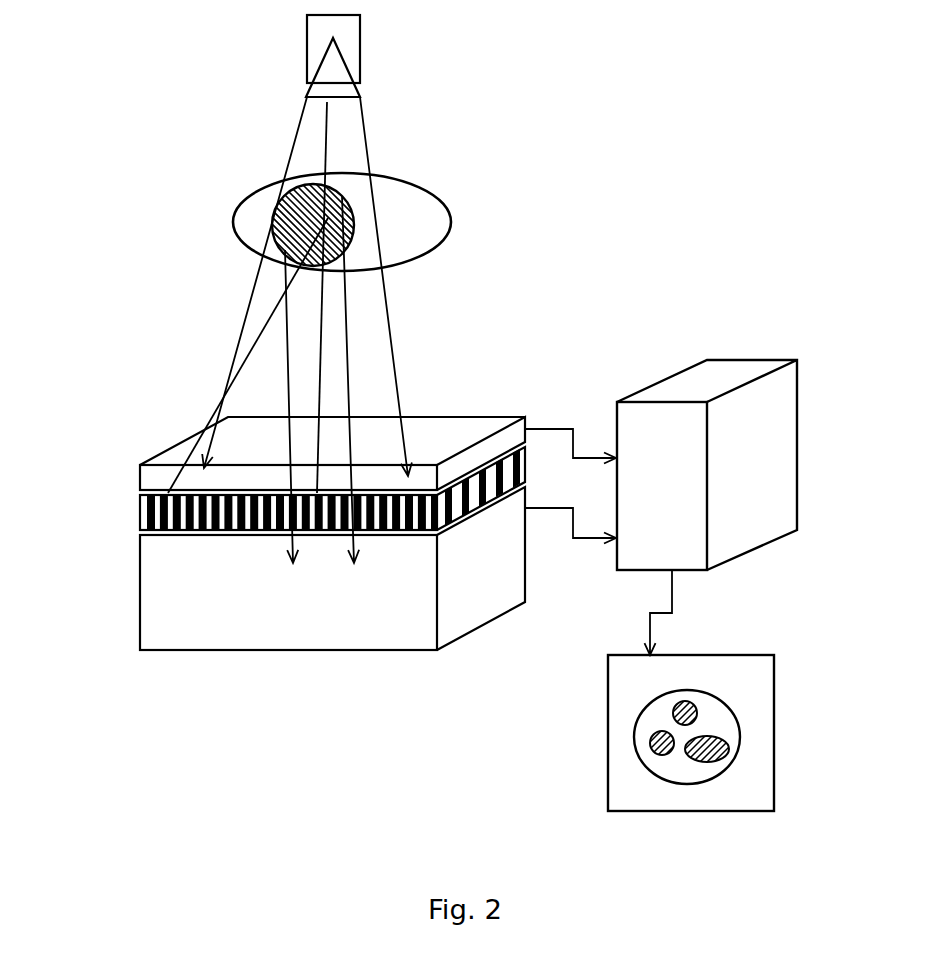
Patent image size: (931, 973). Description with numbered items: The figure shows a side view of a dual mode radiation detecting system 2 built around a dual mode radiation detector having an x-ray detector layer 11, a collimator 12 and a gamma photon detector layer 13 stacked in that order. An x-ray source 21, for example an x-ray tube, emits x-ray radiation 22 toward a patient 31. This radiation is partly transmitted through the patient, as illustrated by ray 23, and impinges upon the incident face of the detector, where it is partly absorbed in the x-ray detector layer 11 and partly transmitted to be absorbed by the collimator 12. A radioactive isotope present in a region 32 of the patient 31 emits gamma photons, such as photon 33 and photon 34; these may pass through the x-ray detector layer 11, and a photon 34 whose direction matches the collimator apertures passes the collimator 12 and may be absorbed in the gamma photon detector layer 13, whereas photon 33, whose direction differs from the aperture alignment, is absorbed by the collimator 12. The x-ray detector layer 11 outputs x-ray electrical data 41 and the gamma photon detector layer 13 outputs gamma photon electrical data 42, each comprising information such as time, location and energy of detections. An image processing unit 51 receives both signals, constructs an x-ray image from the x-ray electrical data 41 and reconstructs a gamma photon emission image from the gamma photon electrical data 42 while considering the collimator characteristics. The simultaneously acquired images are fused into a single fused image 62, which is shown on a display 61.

The dual mode radiation detecting system 2 is at (586, 218).
The x-ray source 21 is at (317, 39).
The x-ray radiation 22 is at (370, 143).
The ray 23 is at (325, 303).
The patient 31 is at (253, 228).
The region 32 is at (328, 218).
The photon 33 is at (267, 323).
The photon 34 is at (288, 363).
The x-ray detector layer 11 is at (158, 480).
The collimator 12 is at (148, 510).
The gamma photon detector layer 13 is at (158, 575).
The x-ray electrical data 41 is at (573, 429).
The gamma photon electrical data 42 is at (573, 538).
The image processing unit 51 is at (705, 378).
The display 61 is at (636, 782).
The fused image 62 is at (650, 723).